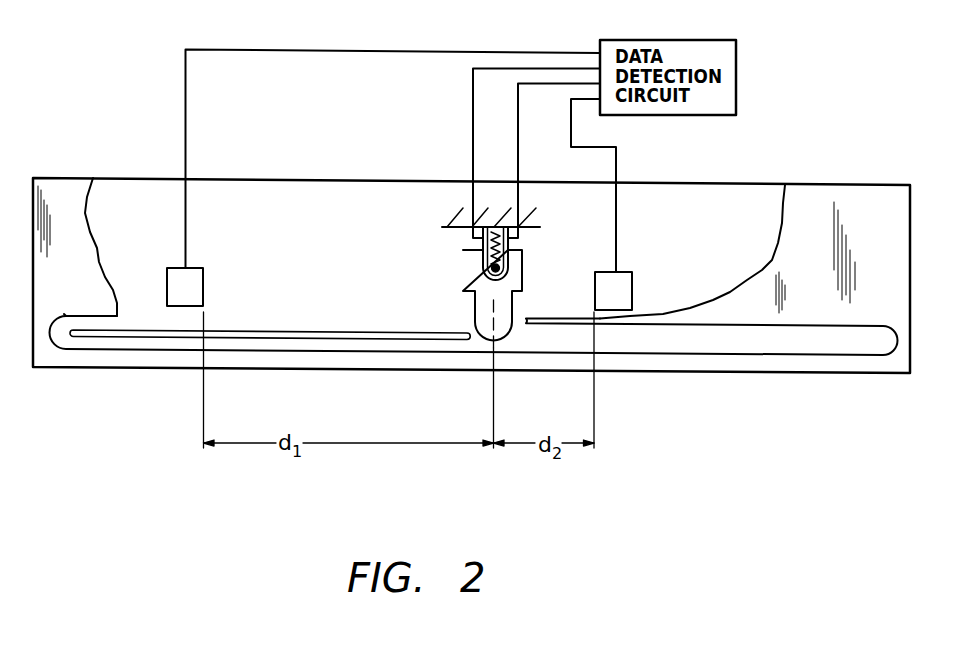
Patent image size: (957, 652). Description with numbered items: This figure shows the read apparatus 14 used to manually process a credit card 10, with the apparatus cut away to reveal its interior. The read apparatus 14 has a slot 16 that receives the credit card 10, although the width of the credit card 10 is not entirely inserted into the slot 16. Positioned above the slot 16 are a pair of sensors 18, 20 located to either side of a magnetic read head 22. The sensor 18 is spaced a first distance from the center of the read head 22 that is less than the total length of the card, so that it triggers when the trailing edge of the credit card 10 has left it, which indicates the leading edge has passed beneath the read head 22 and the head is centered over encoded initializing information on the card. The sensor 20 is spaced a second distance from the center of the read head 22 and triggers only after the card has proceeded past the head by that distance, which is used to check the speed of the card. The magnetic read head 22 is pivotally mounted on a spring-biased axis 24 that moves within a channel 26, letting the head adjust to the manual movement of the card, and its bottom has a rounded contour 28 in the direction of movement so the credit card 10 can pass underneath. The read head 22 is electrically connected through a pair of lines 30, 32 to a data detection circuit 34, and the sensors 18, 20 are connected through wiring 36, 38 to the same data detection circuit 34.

The credit card 10 is at (314, 331).
The read apparatus 14 is at (750, 409).
The slot 16 is at (64, 314).
The sensor 18 is at (167, 292).
The sensor 20 is at (632, 282).
The magnetic read head 22 is at (464, 291).
The spring-biased axis 24 is at (491, 267).
The channel 26 is at (508, 253).
The rounded contour 28 is at (481, 339).
The line 30 is at (473, 112).
The line 32 is at (518, 165).
The data detection circuit 34 is at (679, 116).
The wiring 36 is at (263, 50).
The wiring 38 is at (616, 223).